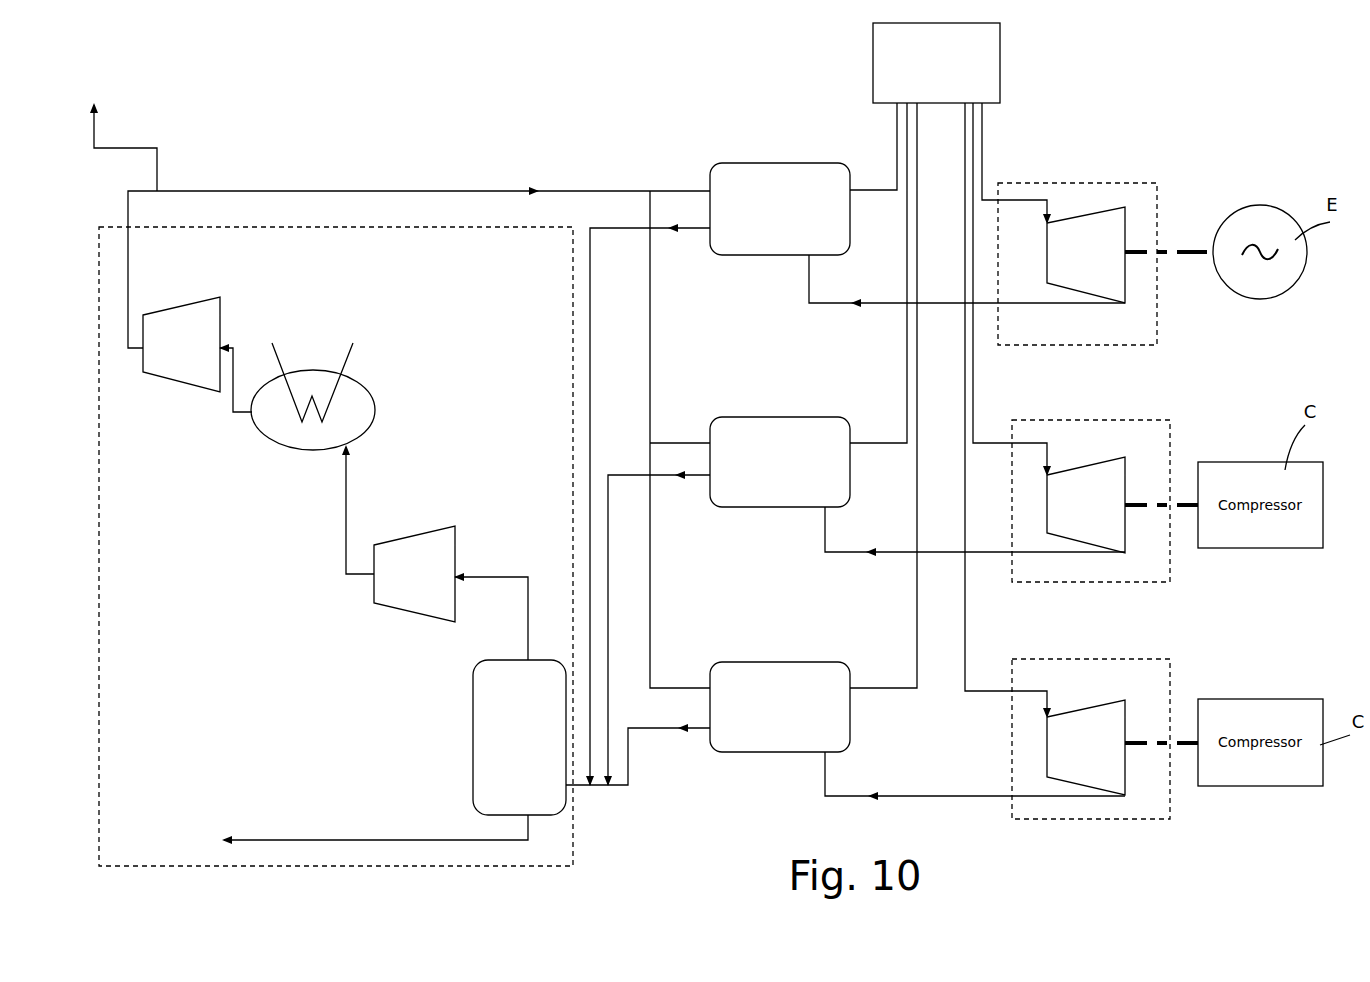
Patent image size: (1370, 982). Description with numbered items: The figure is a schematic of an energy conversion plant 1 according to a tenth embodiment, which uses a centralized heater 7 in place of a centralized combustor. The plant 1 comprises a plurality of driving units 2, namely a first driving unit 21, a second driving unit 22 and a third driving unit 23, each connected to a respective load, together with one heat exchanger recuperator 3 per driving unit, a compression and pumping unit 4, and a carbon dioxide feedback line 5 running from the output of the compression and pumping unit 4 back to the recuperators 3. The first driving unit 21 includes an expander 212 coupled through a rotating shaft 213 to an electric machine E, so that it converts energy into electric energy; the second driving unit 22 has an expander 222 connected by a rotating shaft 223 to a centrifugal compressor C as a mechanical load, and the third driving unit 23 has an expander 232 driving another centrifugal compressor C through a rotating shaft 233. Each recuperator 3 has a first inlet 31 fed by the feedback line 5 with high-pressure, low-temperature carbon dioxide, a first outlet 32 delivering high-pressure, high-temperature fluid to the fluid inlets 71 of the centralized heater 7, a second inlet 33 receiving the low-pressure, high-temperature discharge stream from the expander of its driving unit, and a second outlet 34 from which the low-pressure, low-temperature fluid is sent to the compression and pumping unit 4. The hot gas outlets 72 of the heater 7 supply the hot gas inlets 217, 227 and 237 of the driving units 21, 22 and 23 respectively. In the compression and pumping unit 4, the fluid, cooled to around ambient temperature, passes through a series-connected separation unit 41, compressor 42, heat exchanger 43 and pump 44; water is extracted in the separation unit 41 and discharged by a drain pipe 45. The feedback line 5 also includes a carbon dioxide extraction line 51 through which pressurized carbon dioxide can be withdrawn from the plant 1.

The energy conversion plant 1 is at (1290, 115).
The driving unit 2 is at (1138, 135).
The heat exchanger recuperator 3 is at (745, 178).
The compression and pumping unit 4 is at (570, 847).
The carbon dioxide feedback line 5 is at (285, 191).
The centralized heater 7 is at (929, 70).
The first driving unit 21 is at (1157, 205).
The second driving unit 22 is at (1170, 445).
The third driving unit 23 is at (1170, 675).
The first inlet 31 is at (710, 190).
The first outlet 32 is at (850, 190).
The second inlet 33 is at (809, 260).
The second outlet 34 is at (710, 230).
The separation unit 41 is at (473, 728).
The compressor 42 is at (437, 525).
The heat exchanger 43 is at (375, 400).
The pump 44 is at (220, 312).
The drain pipe 45 is at (292, 838).
The carbon dioxide extraction line 51 is at (94, 128).
The fluid inlets 71 is at (888, 122).
The hot gas outlets 72 is at (990, 118).
The expander 212 is at (1127, 285).
The rotating shaft 213 is at (1185, 255).
The hot gas inlet 217 is at (1048, 205).
The expander 222 is at (1112, 498).
The rotating shaft 223 is at (1190, 508).
The hot gas inlet 227 is at (1048, 455).
The expander 232 is at (1110, 760).
The rotating shaft 233 is at (1178, 745).
The hot gas inlet 237 is at (1048, 700).